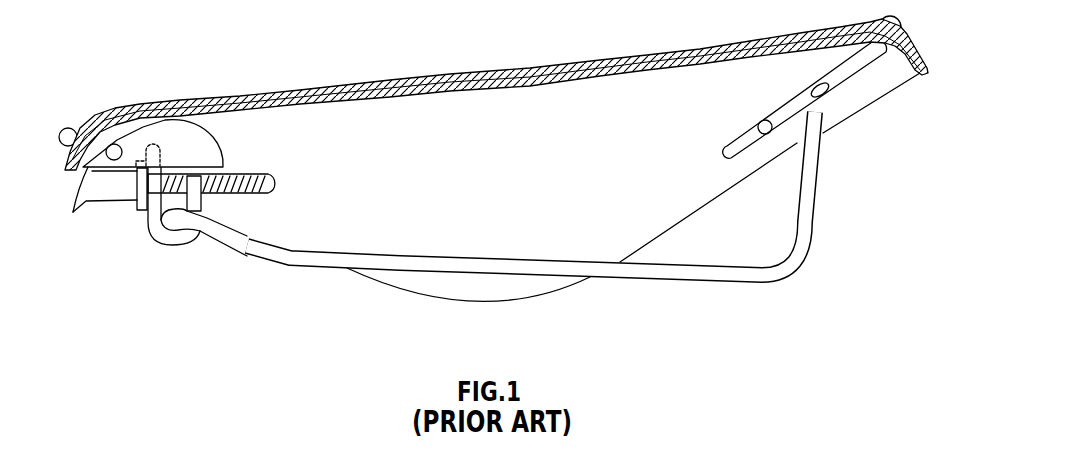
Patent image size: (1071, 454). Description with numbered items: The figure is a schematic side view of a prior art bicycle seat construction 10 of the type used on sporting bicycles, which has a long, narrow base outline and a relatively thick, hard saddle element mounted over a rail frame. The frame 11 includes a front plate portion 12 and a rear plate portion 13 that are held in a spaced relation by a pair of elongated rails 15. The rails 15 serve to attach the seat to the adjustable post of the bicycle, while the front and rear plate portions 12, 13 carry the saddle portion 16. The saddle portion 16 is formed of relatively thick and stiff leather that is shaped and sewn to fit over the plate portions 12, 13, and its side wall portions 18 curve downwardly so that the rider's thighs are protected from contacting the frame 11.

The prior art seat construction 10 is at (493, 171).
The frame 11 is at (263, 263).
The front plate portion 12 is at (190, 143).
The rear plate portion 13 is at (840, 72).
The elongated rails 15 is at (527, 218).
The saddle portion 16 is at (458, 77).
The side wall portions 18 is at (525, 302).